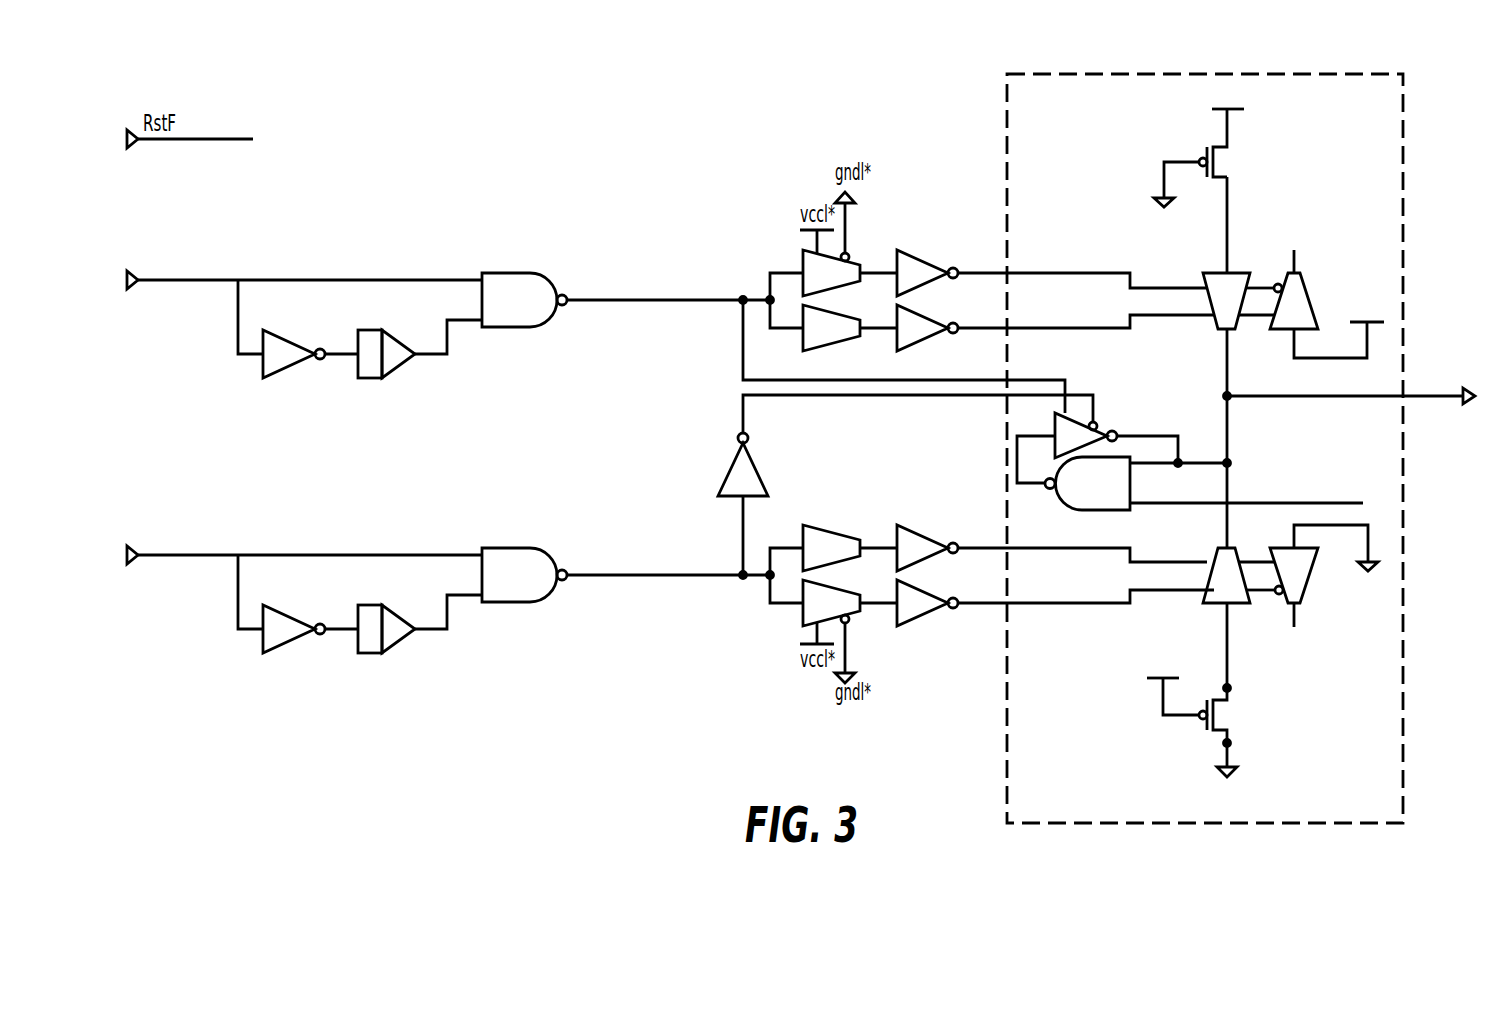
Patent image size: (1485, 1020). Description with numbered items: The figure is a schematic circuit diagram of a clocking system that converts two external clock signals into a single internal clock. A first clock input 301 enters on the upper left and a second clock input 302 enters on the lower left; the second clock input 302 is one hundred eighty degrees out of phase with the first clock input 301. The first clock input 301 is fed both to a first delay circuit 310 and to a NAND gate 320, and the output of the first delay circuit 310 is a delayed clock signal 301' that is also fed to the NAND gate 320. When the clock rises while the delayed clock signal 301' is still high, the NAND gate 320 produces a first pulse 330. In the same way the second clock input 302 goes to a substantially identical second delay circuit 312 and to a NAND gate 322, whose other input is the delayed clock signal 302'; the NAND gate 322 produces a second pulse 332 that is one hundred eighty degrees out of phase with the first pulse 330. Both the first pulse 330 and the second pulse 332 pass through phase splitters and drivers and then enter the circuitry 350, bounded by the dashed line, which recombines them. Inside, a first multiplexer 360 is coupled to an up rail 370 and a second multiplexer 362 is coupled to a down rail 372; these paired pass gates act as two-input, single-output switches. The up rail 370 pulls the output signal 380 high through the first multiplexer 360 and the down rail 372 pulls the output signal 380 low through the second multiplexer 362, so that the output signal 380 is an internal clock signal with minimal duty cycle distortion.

The first clock input 301 is at (182, 285).
The delayed clock signal 301' is at (458, 338).
The second clock input 302 is at (182, 561).
The delayed clock signal 302' is at (458, 614).
The first delay circuit 310 is at (310, 279).
The second delay circuit 312 is at (310, 554).
The NAND gate 320 is at (505, 270).
The NAND gate 322 is at (505, 548).
The first pulse 330 is at (610, 304).
The second pulse 332 is at (610, 579).
The circuitry 350 is at (1207, 73).
The first multiplexer 360 is at (1216, 320).
The second multiplexer 362 is at (1216, 557).
The up rail 370 is at (1229, 238).
The down rail 372 is at (1229, 642).
The output signal 380 is at (1435, 400).